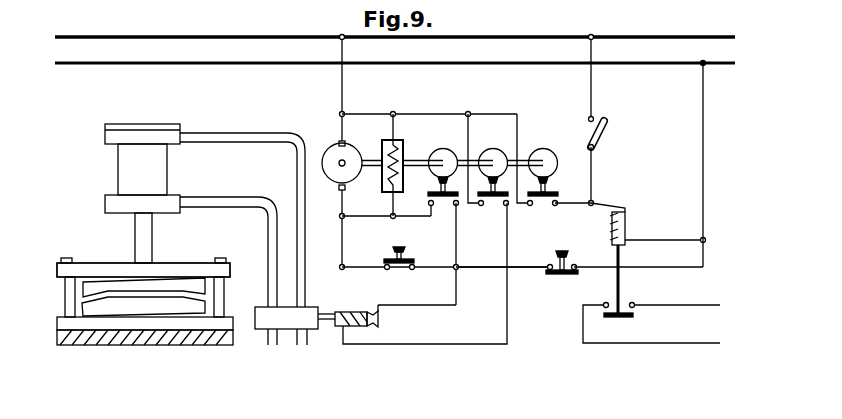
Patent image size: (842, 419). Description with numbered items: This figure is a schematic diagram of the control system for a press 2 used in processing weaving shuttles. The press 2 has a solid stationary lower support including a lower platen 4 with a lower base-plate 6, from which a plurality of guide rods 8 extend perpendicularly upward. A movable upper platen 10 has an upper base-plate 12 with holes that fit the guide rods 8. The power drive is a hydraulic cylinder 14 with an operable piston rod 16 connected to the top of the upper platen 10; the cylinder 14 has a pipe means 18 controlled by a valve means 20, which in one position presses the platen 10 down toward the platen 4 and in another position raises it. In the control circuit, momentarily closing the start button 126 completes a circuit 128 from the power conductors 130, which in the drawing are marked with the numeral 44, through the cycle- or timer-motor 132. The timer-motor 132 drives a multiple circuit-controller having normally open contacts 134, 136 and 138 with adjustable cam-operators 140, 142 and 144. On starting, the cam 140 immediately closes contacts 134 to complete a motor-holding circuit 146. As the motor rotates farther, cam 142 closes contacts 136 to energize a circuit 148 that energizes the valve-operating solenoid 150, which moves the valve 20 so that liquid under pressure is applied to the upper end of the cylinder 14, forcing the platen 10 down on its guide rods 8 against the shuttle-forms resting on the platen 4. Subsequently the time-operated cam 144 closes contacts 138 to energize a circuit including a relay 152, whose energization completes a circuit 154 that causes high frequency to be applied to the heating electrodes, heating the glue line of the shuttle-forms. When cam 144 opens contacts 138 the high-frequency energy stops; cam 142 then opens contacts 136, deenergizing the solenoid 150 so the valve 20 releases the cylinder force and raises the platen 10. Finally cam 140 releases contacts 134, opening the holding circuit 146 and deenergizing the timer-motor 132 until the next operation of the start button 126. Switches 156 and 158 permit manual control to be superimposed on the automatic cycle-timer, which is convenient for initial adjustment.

The press 2 is at (89, 239).
The lower platen 4 is at (145, 320).
The lower base-plate 6 is at (60, 323).
The guide rods 8 is at (65, 289).
The upper platen 10 is at (143, 278).
The upper base-plate 12 is at (190, 268).
The hydraulic cylinder 14 is at (153, 170).
The piston rod 16 is at (148, 239).
The pipe means 18 is at (298, 168).
The valve means 20 is at (289, 332).
The power supply lines 44 is at (395, 18).
The start button 126 is at (404, 246).
The circuit 128 is at (522, 266).
The power conductors 130 is at (292, 39).
The timer-motor 132 is at (335, 148).
The contacts 134 is at (445, 198).
The contacts 136 is at (495, 198).
The contacts 138 is at (545, 198).
The cam-operator 140 is at (448, 143).
The cam-operator 142 is at (498, 143).
The cam-operator 144 is at (548, 143).
The motor-holding circuit 146 is at (457, 244).
The circuit 148 is at (459, 344).
The valve-operating solenoid 150 is at (362, 312).
The relay 152 is at (627, 229).
The circuit 154 is at (633, 345).
The switch 156 is at (562, 257).
The switch 158 is at (605, 137).